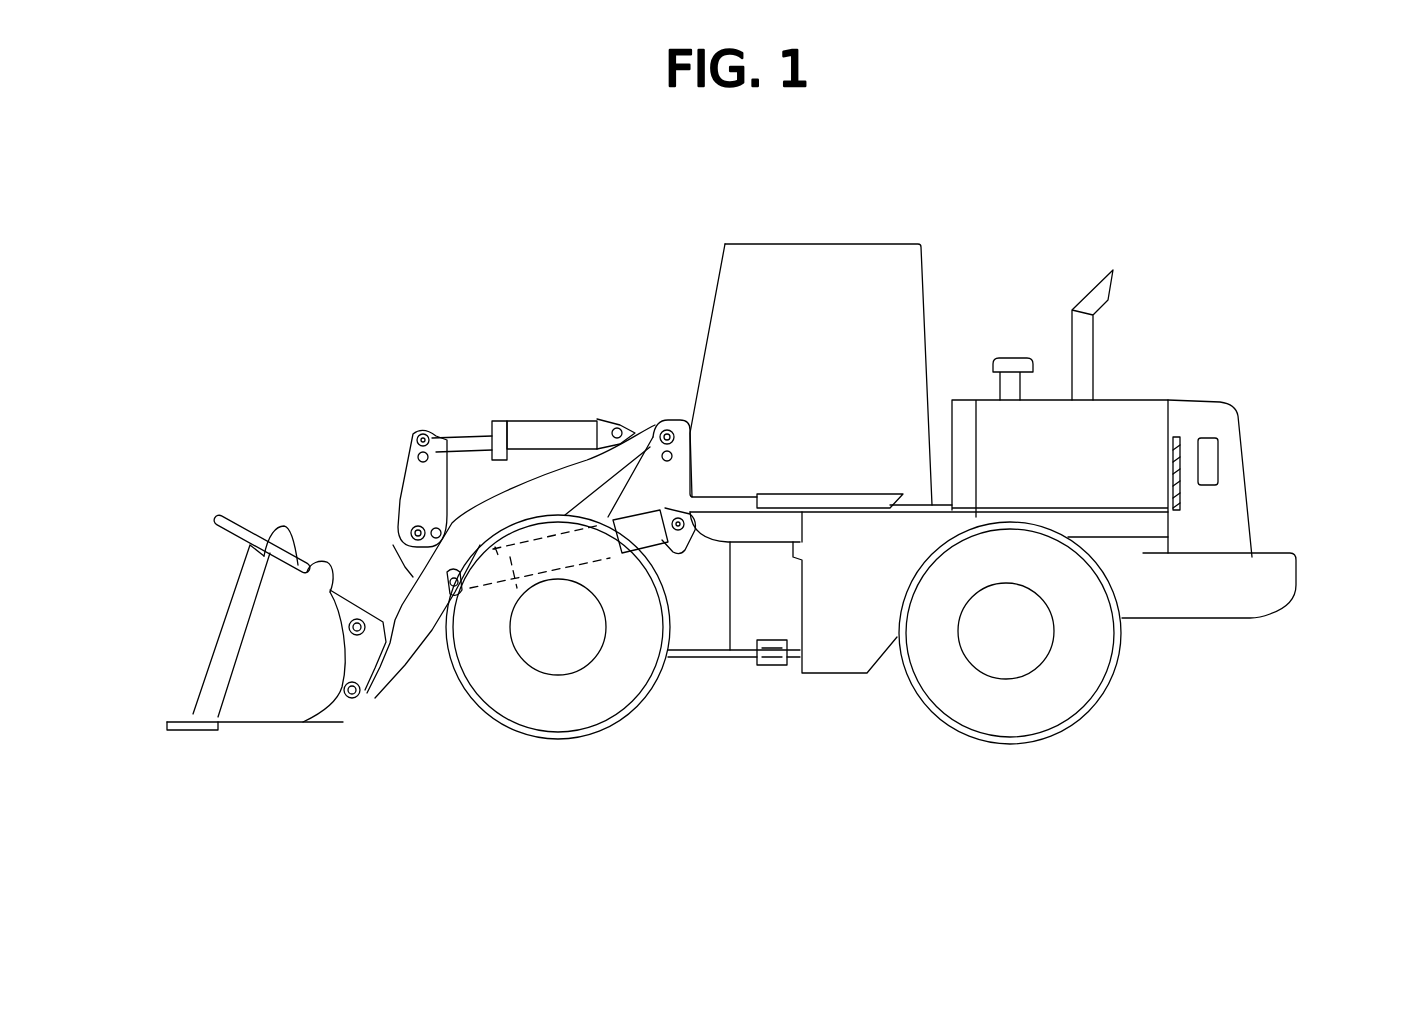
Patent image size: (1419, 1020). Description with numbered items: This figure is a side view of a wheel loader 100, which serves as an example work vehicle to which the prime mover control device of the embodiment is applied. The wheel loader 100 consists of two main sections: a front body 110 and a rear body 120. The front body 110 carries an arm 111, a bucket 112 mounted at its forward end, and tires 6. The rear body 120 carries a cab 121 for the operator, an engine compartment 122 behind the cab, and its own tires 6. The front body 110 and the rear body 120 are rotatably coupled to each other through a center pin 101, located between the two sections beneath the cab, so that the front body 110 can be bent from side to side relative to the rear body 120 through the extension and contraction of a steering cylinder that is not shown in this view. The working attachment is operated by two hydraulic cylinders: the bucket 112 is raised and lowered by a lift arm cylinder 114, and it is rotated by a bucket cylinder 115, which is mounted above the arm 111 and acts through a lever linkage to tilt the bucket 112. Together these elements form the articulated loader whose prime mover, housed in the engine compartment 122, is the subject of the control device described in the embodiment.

The wheel loader 100 is at (1186, 641).
The center pin 101 is at (766, 667).
The front body 110 is at (655, 420).
The arm 111 is at (393, 600).
The bucket 112 is at (262, 530).
The lift arm cylinder 114 is at (500, 593).
The bucket cylinder 115 is at (541, 418).
The rear body 120 is at (1265, 580).
The cab 121 is at (765, 268).
The engine compartment 122 is at (1148, 420).
The tires 6 is at (545, 707).